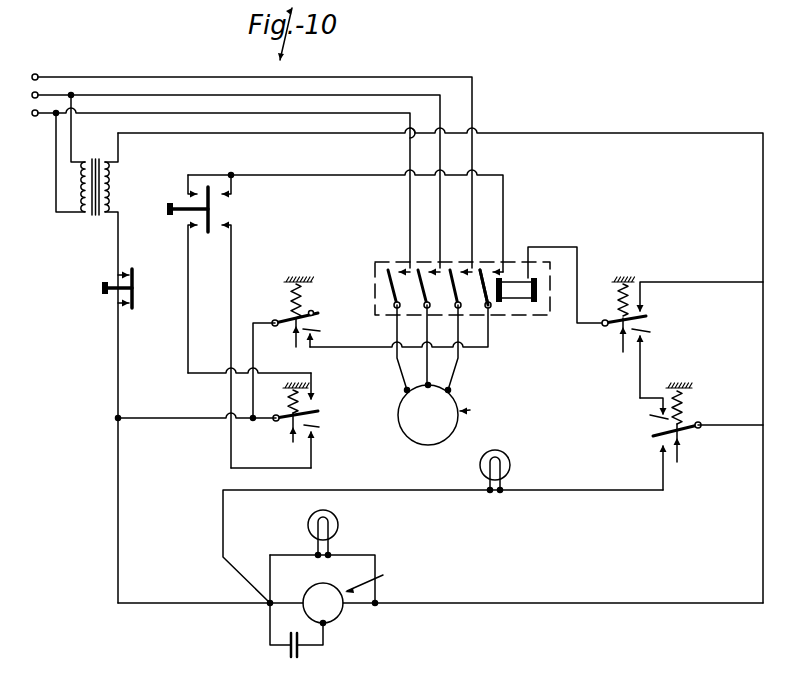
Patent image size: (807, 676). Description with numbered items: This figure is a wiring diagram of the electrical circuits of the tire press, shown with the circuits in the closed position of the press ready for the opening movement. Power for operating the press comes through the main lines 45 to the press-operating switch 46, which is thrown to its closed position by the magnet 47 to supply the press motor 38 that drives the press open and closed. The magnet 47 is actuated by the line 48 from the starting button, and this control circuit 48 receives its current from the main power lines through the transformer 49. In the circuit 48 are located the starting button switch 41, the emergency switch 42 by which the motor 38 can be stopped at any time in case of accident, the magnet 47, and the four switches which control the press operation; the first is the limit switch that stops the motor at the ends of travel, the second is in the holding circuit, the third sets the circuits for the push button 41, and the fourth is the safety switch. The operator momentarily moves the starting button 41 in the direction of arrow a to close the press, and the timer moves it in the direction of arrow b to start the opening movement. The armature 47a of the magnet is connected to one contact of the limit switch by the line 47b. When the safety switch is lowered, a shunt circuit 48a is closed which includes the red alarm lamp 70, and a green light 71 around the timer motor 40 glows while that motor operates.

The main lines 45 is at (357, 112).
The transformer 49 is at (105, 162).
The line 48 is at (340, 175).
The starting button 41 is at (185, 215).
The arrow a is at (228, 209).
The arrow b is at (143, 208).
The emergency switch 42 is at (134, 293).
The line 47b is at (347, 349).
The press-operating switch 46 is at (500, 314).
The armature 47a is at (490, 270).
The magnet 47 is at (518, 280).
The press motor 38 is at (428, 445).
The shunt circuit 48a is at (581, 491).
The lamp 70 is at (504, 454).
The second light 71 is at (335, 521).
The timer motor 40 is at (339, 617).